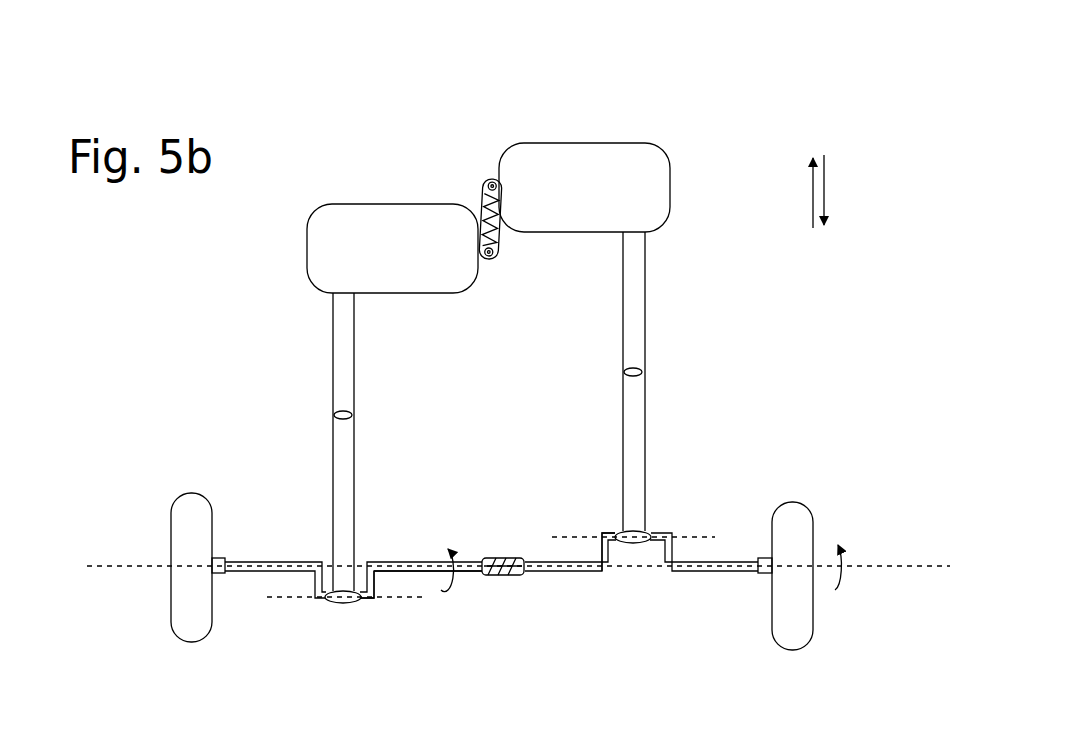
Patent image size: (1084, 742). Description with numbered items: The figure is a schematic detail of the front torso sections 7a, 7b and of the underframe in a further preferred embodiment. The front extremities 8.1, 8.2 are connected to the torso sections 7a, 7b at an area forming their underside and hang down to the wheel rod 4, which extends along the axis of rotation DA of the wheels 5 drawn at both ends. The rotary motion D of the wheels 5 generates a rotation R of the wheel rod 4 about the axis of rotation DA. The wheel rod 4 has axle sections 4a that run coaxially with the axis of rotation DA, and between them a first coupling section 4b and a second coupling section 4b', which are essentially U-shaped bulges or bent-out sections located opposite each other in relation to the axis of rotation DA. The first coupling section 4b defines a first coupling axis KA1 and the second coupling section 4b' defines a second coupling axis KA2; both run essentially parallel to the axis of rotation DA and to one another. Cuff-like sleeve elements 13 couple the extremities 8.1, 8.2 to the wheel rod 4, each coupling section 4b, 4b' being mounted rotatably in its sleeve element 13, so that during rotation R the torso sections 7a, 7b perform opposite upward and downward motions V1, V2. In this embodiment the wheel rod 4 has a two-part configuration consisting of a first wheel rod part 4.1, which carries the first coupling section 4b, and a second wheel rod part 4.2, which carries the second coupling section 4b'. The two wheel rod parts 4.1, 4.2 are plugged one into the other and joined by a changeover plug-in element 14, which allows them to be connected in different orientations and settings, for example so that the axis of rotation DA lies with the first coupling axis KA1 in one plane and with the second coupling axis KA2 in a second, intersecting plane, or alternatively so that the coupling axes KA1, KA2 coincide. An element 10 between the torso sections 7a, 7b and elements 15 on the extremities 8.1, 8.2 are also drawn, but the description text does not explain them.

The wheel rod 4 is at (491, 572).
The axle sections 4a is at (253, 558).
The first coupling section 4b is at (587, 507).
The second coupling section 4b' is at (375, 635).
The first wheel rod part 4.1 is at (582, 580).
The second wheel rod part 4.2 is at (420, 582).
The wheels 5 is at (177, 538).
The front torso section 7a is at (660, 173).
The front torso section 7b is at (323, 235).
The front extremity 8.1 is at (635, 280).
The front extremity 8.2 is at (343, 324).
The spring element 10 is at (485, 181).
The cuff-like sleeve element 13 is at (345, 600).
The changeover plug-in element 14 is at (502, 562).
The sensor 15 is at (333, 415).
The first coupling axis KA1 is at (639, 527).
The second coupling axis KA2 is at (338, 608).
The axis of rotation DA is at (521, 551).
The rotation of the wheel rod R is at (459, 557).
The rotary motion of the wheels D is at (851, 554).
The upward motion V1 is at (794, 193).
The downward motion V2 is at (844, 190).